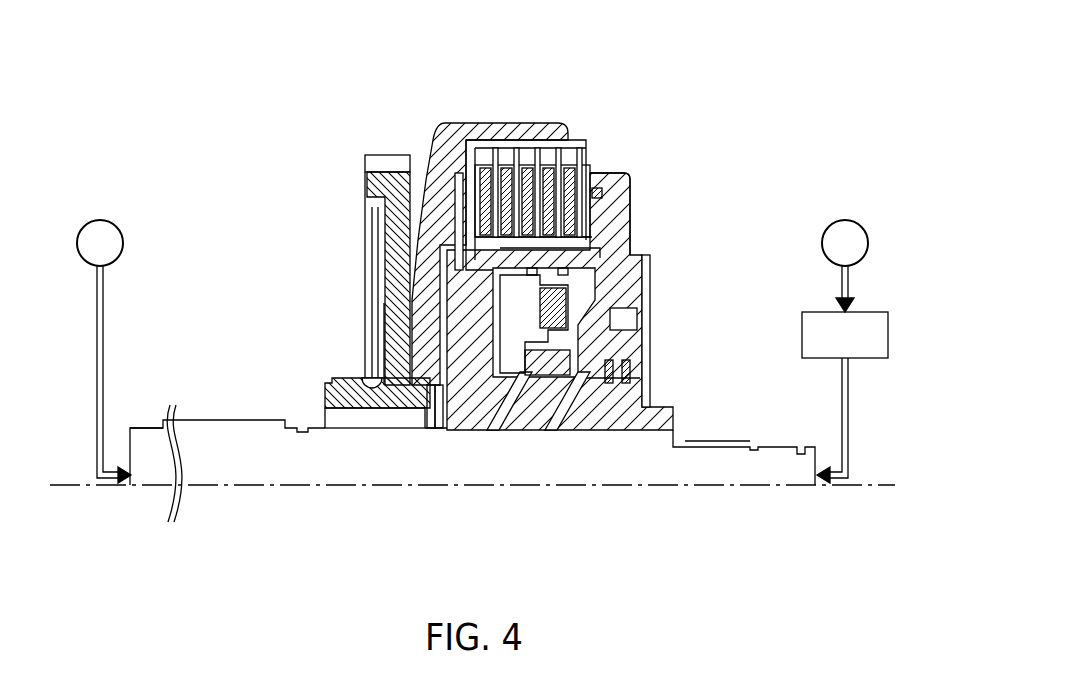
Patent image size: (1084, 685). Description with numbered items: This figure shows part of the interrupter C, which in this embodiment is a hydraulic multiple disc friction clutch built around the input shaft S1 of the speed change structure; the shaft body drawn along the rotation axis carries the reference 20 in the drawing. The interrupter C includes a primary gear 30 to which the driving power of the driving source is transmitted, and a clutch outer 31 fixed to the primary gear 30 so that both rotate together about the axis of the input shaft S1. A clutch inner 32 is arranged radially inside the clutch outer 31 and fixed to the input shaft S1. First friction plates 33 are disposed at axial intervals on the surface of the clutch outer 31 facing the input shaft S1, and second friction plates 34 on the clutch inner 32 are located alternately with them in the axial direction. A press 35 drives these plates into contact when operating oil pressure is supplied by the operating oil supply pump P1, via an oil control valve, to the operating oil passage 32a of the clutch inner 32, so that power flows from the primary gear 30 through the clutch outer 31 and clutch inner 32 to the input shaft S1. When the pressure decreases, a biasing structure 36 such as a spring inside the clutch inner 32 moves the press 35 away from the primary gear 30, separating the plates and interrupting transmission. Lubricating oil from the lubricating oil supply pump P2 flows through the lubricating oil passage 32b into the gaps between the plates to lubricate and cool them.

The camshaft 20 is at (220, 418).
The input shaft S1 is at (145, 428).
The primary gear 30 is at (365, 183).
The clutch outer 31 is at (445, 123).
The clutch inner 32 is at (672, 415).
The operating oil passage 32a is at (563, 405).
The lubricating oil passage 32b is at (510, 403).
The first friction plates 33 is at (585, 130).
The second friction plates 34 is at (578, 165).
The press 35 is at (628, 186).
The biasing structure 36 is at (573, 283).
The interrupter C is at (650, 100).
The operating oil supply pump P1 is at (846, 220).
The lubricating oil supply pump P2 is at (101, 220).